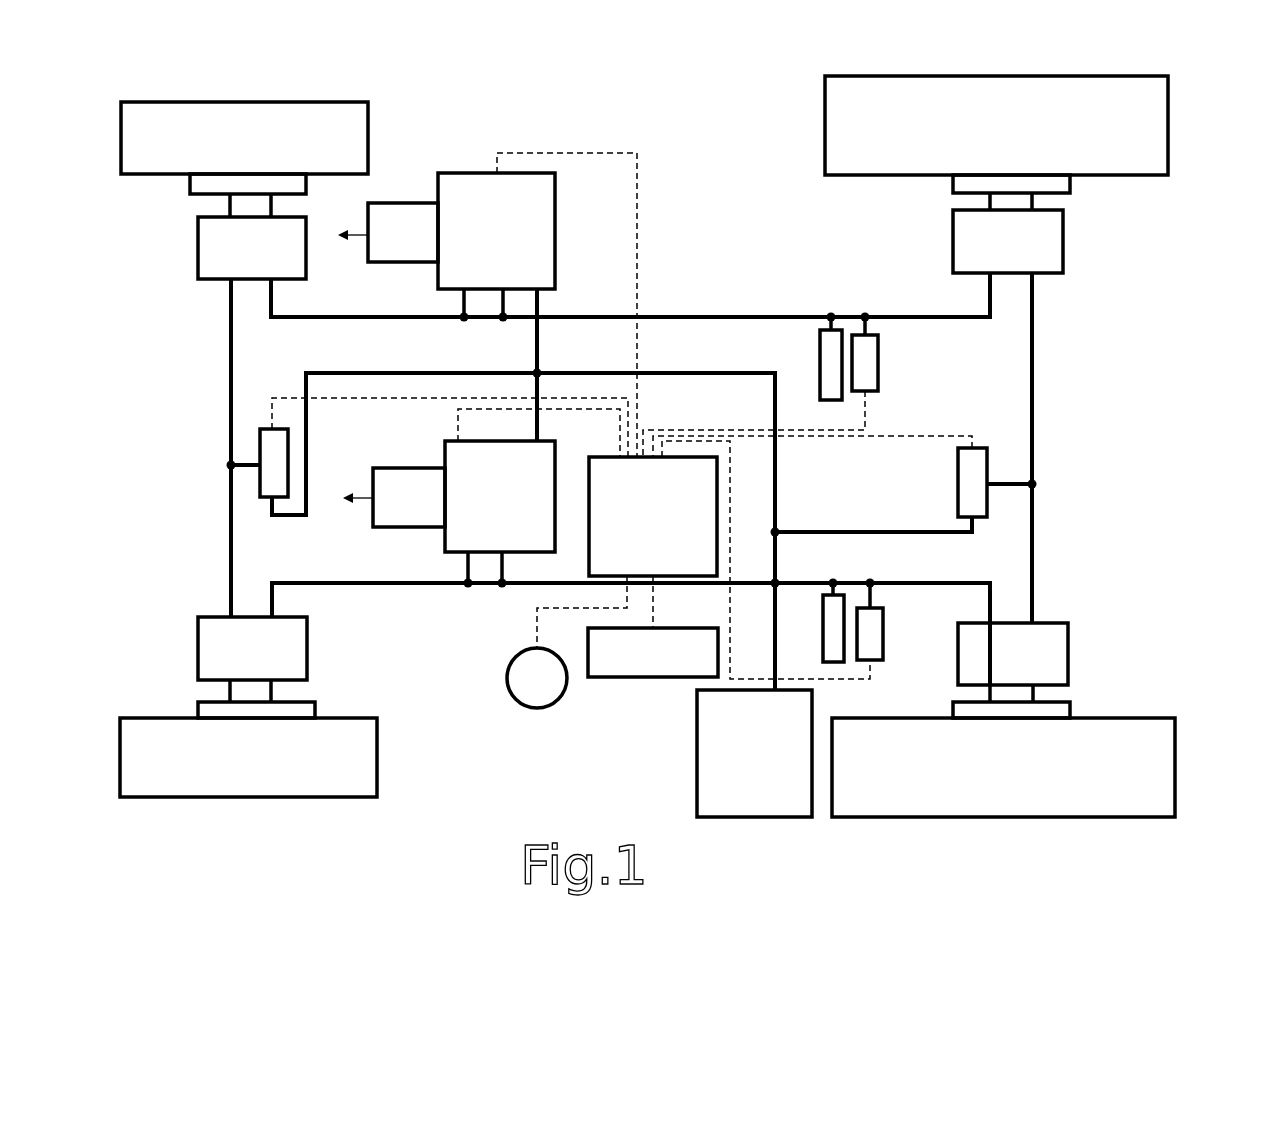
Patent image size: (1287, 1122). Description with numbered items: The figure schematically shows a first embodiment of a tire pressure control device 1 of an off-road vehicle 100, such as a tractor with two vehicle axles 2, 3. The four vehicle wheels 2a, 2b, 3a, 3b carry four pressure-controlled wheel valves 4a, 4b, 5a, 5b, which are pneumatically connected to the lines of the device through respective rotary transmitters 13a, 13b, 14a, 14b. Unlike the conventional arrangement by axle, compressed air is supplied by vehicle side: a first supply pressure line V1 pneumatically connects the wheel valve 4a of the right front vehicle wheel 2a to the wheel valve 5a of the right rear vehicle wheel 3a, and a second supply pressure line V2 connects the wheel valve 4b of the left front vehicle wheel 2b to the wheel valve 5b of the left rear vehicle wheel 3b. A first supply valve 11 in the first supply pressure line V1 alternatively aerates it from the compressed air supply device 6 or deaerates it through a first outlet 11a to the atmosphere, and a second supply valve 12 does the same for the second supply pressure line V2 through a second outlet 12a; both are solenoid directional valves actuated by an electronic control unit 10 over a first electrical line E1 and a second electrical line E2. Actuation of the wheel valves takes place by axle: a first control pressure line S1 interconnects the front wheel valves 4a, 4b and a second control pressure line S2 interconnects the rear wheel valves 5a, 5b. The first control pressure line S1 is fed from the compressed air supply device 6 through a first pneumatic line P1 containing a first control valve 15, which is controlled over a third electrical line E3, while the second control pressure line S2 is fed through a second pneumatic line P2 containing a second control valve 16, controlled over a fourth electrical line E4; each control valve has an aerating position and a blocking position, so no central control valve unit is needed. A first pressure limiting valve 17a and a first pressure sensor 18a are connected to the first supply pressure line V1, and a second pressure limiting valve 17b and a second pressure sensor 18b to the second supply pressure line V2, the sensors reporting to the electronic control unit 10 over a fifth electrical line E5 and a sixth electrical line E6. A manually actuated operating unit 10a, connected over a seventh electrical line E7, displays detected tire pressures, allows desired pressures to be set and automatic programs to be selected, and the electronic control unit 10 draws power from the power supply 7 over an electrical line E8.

The tire pressure control device 1 is at (556, 126).
The off-road vehicle 100 is at (1160, 470).
The front vehicle axle 2 is at (245, 800).
The rear vehicle axle 3 is at (1007, 820).
The right front vehicle wheel 2a is at (244, 138).
The left front vehicle wheel 2b is at (248, 757).
The right rear vehicle wheel 3a is at (996, 125).
The left rear vehicle wheel 3b is at (1003, 767).
The wheel valve 4a is at (188, 185).
The wheel valve 4b is at (198, 712).
The wheel valve 5a is at (1072, 183).
The wheel valve 5b is at (1070, 711).
The compressed air supply device 6 is at (754, 753).
The power supply 7 is at (537, 678).
The electronic control unit 10 is at (653, 516).
The operating unit 10a is at (653, 652).
The first supply valve 11 is at (496, 247).
The first outlet 11a is at (389, 232).
The second supply valve 12 is at (500, 514).
The second outlet 12a is at (395, 497).
The rotary transmitter 13a is at (252, 236).
The rotary transmitter 13b is at (252, 659).
The rotary transmitter 14a is at (1008, 233).
The rotary transmitter 14b is at (1013, 662).
The first control valve 15 is at (261, 446).
The second control valve 16 is at (988, 470).
The first pressure limiting valve 17a is at (820, 362).
The second pressure limiting valve 17b is at (824, 648).
The first pressure sensor 18a is at (878, 365).
The second pressure sensor 18b is at (883, 635).
The first supply pressure line V1 is at (330, 318).
The second supply pressure line V2 is at (340, 585).
The first pneumatic line P1 is at (427, 373).
The second pneumatic line P2 is at (843, 532).
The first control pressure line S1 is at (232, 565).
The second control pressure line S2 is at (1032, 567).
The first electrical line E1 is at (637, 218).
The second electrical line E2 is at (456, 428).
The third electrical line E3 is at (340, 400).
The fourth electrical line E4 is at (925, 436).
The fifth electrical line E5 is at (866, 412).
The sixth electrical line E6 is at (730, 600).
The seventh electrical line E7 is at (655, 600).
The electrical line E8 is at (527, 620).